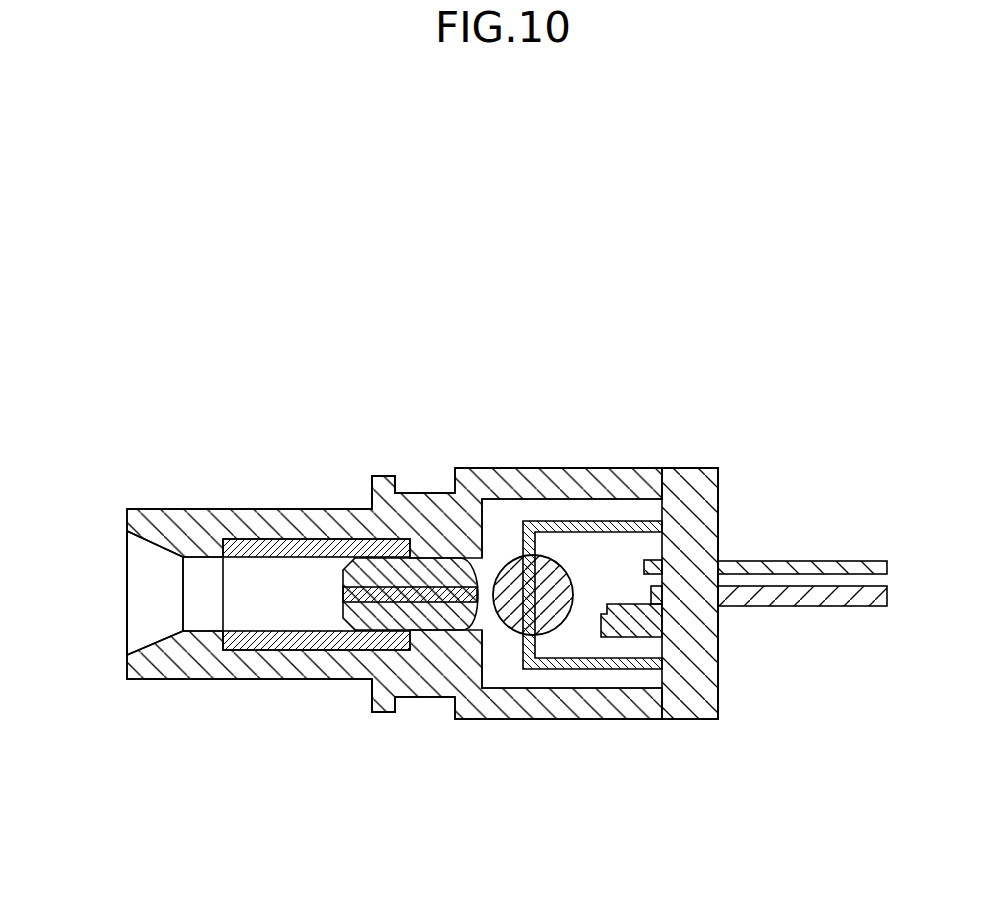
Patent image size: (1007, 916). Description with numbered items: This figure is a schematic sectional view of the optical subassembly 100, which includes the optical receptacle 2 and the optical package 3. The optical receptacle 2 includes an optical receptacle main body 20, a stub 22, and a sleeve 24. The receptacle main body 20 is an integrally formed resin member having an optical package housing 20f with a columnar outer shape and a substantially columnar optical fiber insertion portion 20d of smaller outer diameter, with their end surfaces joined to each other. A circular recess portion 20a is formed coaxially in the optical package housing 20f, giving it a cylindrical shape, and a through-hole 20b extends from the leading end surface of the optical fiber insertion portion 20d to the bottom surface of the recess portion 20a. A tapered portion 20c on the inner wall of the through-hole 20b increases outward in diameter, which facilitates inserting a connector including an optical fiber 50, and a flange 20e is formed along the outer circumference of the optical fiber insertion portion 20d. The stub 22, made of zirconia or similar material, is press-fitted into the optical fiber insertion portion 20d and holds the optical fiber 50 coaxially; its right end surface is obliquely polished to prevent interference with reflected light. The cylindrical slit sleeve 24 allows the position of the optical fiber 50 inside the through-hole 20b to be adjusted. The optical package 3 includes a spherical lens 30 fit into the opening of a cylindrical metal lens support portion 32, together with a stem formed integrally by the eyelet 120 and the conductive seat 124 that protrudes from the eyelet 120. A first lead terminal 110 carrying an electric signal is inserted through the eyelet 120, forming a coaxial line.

The optical subassembly 100 is at (730, 328).
The optical receptacle 2 is at (337, 712).
The optical package 3 is at (631, 668).
The optical receptacle main body 20 is at (217, 508).
The recess portion 20a is at (512, 512).
The through-hole 20b is at (272, 600).
The tapered portion 20c is at (152, 545).
The optical fiber insertion portion 20d is at (155, 515).
The flange 20e is at (390, 475).
The optical package housing 20f is at (623, 467).
The stub 22 is at (390, 563).
The sleeve 24 is at (307, 540).
The lens 30 is at (528, 592).
The lens support portion 32 is at (590, 669).
The optical fiber 50 is at (437, 600).
The first lead terminal 110 is at (805, 606).
The eyelet 120 is at (695, 467).
The seat 124 is at (637, 637).